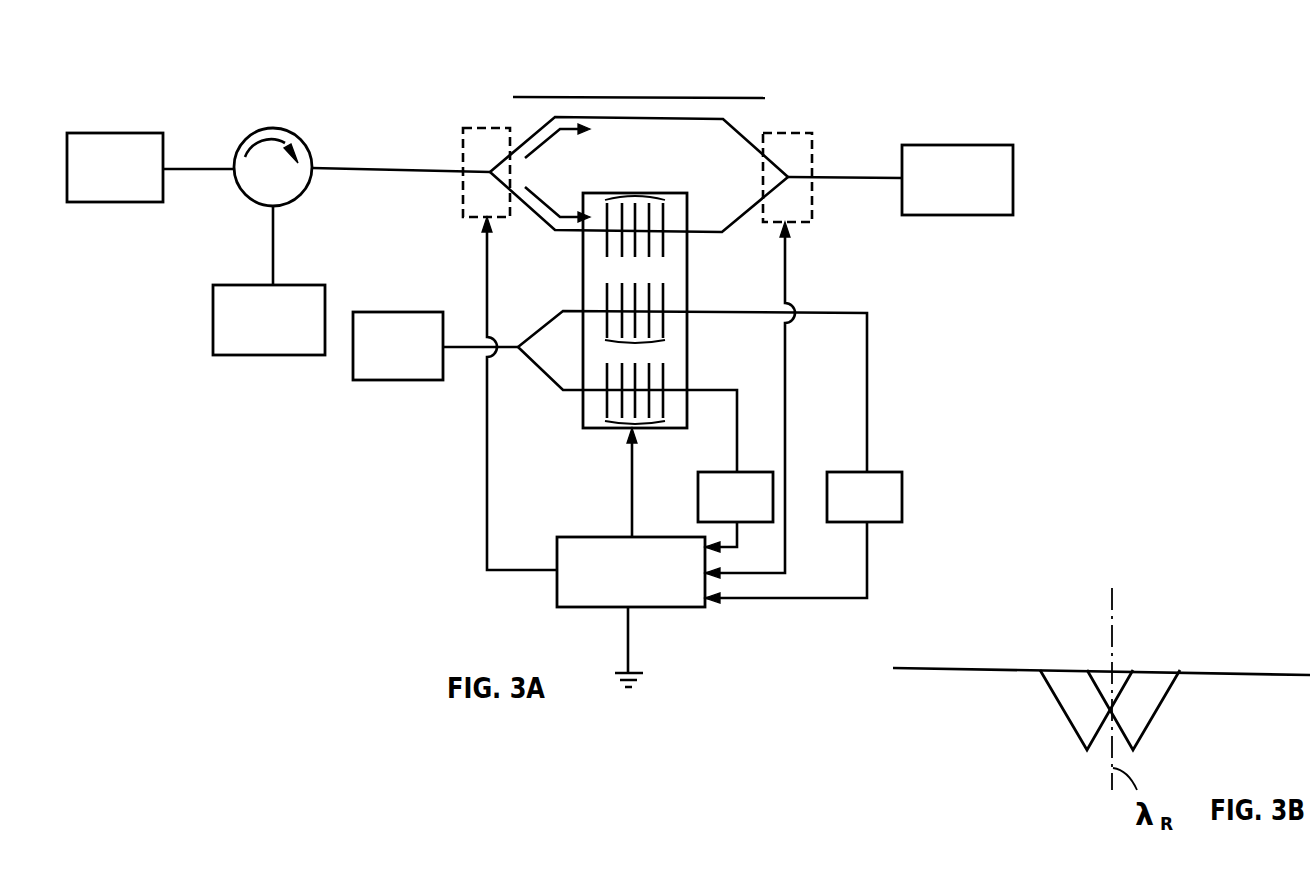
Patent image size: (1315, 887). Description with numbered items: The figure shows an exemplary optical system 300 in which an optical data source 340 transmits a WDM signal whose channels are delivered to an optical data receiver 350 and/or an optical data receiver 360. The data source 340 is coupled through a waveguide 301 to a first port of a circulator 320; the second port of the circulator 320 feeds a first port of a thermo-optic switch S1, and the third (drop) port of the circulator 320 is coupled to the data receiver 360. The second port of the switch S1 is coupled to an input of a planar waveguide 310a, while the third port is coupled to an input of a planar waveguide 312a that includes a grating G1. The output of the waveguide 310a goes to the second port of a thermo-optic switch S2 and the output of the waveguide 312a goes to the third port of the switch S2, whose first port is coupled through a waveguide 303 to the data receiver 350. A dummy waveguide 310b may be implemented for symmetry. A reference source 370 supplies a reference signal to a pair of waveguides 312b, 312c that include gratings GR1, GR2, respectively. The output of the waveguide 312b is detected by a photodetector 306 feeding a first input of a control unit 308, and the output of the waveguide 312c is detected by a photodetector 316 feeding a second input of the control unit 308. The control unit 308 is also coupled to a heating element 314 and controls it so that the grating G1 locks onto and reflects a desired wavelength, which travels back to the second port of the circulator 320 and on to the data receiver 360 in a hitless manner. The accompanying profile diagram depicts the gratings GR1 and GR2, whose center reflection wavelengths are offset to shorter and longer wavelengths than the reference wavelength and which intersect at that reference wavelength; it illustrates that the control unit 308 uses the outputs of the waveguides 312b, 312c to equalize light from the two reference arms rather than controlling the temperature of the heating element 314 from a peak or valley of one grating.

In FIG. 3A, the optical system 300 is at (888, 67).
In FIG. 3A, the waveguide 301 is at (197, 172).
In FIG. 3A, the waveguide 303 is at (835, 178).
In FIG. 3A, the photodetector 306 is at (890, 472).
In FIG. 3A, the control unit 308 is at (577, 537).
In FIG. 3A, the planar waveguide 310a is at (700, 112).
In FIG. 3A, the dummy waveguide 310b is at (592, 97).
In FIG. 3A, the planar waveguide 312a is at (698, 237).
In FIG. 3A, the waveguide 312b is at (573, 307).
In FIG. 3A, the waveguide 312c is at (573, 396).
In FIG. 3A, the heating element 314 is at (687, 380).
In FIG. 3A, the photodetector 316 is at (712, 472).
In FIG. 3A, the circulator 320 is at (275, 129).
In FIG. 3A, the optical data source 340 is at (150, 133).
In FIG. 3A, the optical data receiver 350 is at (1000, 143).
In FIG. 3A, the optical data receiver 360 is at (288, 284).
In FIG. 3A, the reference source 370 is at (387, 312).
In FIG. 3A, the thermo-optic switch S1 is at (487, 128).
In FIG. 3A, the thermo-optic switch S2 is at (795, 133).
In FIG. 3A, the grating G1 is at (637, 196).
In FIG. 3A, the grating GR1 is at (633, 342).
In FIG. 3B, the grating GR1 is at (1063, 710).
In FIG. 3A, the grating GR2 is at (632, 424).
In FIG. 3B, the grating GR2 is at (1163, 703).